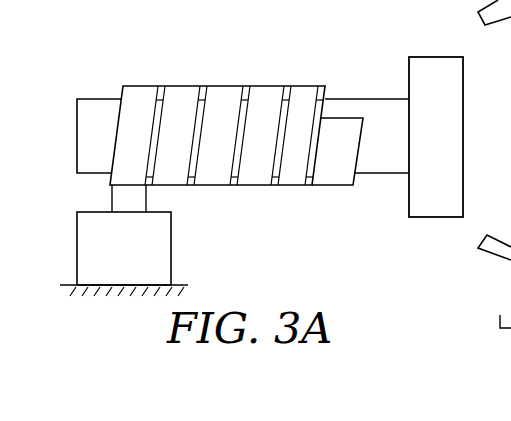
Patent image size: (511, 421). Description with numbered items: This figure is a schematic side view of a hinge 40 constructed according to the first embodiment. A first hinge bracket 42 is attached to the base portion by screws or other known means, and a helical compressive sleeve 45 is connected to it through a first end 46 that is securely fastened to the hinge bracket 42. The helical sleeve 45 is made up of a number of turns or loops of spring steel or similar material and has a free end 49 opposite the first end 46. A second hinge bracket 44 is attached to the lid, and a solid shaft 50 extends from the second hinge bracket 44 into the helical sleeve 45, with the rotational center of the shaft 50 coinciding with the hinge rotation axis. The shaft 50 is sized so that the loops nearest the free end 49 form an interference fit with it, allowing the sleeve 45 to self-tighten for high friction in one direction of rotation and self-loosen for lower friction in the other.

The hinge 40 is at (91, 60).
The first hinge bracket 42 is at (163, 242).
The second hinge bracket 44 is at (465, 135).
The helical compressive sleeve 45 is at (263, 93).
The first end 46 is at (112, 197).
The free end 49 is at (335, 180).
The solid shaft 50 is at (378, 104).